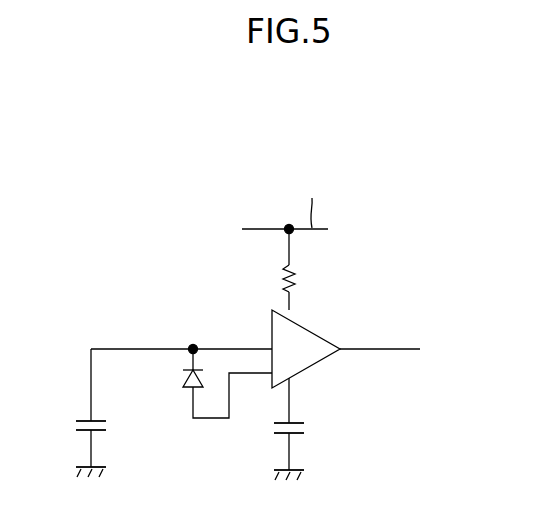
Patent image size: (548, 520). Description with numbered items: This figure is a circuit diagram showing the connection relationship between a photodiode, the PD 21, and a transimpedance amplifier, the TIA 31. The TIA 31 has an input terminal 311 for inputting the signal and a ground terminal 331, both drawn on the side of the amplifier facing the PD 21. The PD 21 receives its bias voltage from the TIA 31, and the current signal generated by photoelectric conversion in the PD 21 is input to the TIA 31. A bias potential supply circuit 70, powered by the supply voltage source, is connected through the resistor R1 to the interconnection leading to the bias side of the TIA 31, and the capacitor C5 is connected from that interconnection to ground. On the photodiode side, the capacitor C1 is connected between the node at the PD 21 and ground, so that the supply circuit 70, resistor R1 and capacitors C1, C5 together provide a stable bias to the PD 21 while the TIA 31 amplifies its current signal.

The bias potential supply circuit 70 is at (276, 201).
The resistor R1 is at (300, 270).
The TIA 31 is at (310, 331).
The ground terminal 331 is at (268, 347).
The input terminal 311 is at (266, 378).
The PD 21 is at (180, 378).
The capacitor C1 is at (74, 413).
The capacitor C5 is at (305, 429).